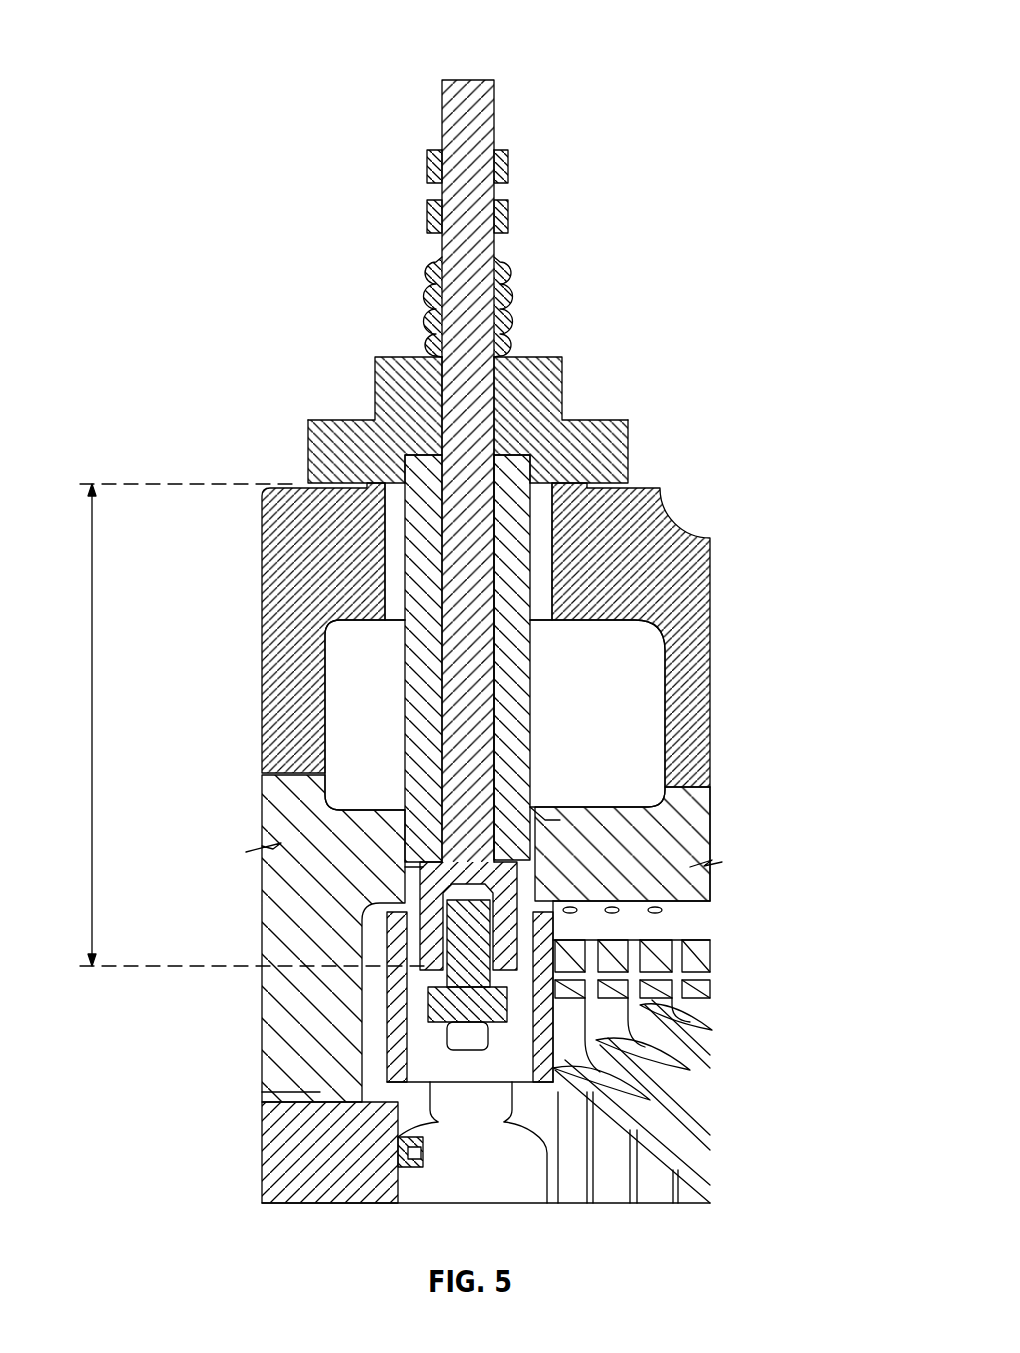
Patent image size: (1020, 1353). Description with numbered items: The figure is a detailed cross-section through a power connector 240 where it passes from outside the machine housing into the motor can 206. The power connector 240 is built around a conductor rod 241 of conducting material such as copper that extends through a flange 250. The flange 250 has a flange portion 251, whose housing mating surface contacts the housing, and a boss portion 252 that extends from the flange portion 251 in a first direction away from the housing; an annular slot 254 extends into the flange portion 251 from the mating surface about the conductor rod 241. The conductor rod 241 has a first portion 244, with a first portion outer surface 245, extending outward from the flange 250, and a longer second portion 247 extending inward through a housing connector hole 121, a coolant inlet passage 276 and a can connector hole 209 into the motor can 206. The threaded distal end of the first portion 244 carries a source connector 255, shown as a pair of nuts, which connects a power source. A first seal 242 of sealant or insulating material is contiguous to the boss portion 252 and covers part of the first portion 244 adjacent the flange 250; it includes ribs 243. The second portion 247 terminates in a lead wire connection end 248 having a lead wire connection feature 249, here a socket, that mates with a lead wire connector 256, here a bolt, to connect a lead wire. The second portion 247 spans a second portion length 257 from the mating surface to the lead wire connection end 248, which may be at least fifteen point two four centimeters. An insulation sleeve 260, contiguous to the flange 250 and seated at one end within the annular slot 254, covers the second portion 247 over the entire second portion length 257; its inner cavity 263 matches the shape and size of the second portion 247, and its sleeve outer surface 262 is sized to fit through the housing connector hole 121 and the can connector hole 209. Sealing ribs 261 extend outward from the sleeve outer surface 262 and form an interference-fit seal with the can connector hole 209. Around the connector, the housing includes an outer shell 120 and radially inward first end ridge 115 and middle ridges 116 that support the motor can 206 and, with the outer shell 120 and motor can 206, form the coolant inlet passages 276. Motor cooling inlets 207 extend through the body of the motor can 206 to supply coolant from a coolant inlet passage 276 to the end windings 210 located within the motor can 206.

The power connector 240 is at (656, 52).
The conductor rod 241 is at (496, 77).
The first seal 242 is at (510, 272).
The ribs 243 is at (506, 338).
The first portion 244 is at (456, 228).
The first portion outer surface 245 is at (441, 120).
The source connector 255 is at (430, 170).
The flange 250 is at (595, 366).
The flange portion 251 is at (322, 446).
The boss portion 252 is at (390, 375).
The annular slot 254 is at (548, 462).
The outer shell 120 is at (651, 522).
The housing connector hole 121 is at (398, 598).
The insulation sleeve 260 is at (420, 684).
The sleeve outer surface 262 is at (533, 756).
The inner cavity 263 is at (497, 692).
The second portion 247 is at (455, 790).
The lead wire connection end 248 is at (497, 727).
The lead wire connection feature 249 is at (430, 928).
The coolant inlet passages 276 is at (652, 719).
The can connector hole 209 is at (540, 822).
The first end ridge 115 is at (275, 759).
The middle ridges 116 is at (692, 760).
The motor can 206 is at (699, 830).
The motor cooling inlets 207 is at (665, 911).
The end windings 210 is at (692, 1031).
The sealing ribs 261 is at (403, 850).
The lead wire connector 256 is at (320, 1093).
The second portion length 257 is at (251, 725).